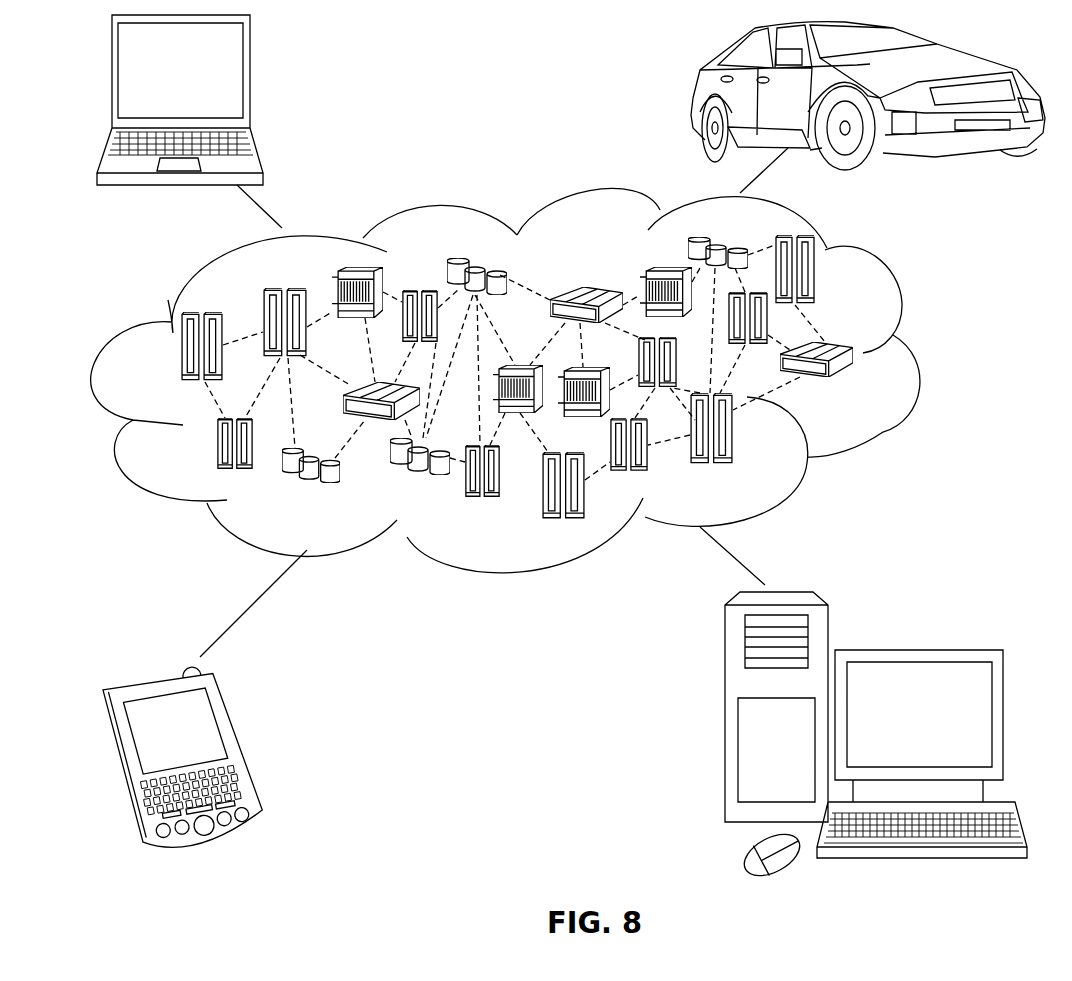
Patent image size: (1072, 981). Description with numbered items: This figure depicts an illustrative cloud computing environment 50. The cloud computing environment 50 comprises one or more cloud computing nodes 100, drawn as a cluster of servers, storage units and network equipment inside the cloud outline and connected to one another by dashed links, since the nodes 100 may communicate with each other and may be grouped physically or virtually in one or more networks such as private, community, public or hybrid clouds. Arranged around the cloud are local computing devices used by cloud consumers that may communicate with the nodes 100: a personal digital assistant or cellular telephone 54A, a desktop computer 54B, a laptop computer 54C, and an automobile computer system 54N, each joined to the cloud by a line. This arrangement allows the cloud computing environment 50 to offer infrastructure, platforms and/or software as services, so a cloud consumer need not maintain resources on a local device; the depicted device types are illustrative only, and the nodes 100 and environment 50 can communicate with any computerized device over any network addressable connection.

The cloud computing environment 50 is at (918, 358).
The cloud computing nodes 100 is at (857, 386).
The personal digital assistant or cellular telephone 54A is at (242, 744).
The desktop computer 54B is at (915, 648).
The laptop computer 54C is at (250, 80).
The automobile computer system 54N is at (693, 97).